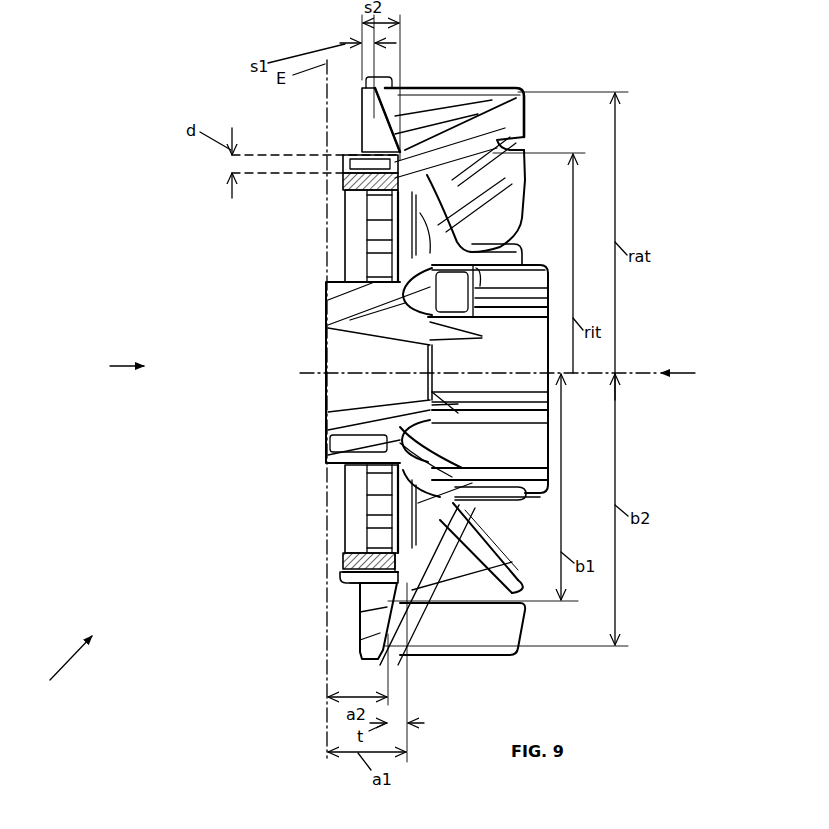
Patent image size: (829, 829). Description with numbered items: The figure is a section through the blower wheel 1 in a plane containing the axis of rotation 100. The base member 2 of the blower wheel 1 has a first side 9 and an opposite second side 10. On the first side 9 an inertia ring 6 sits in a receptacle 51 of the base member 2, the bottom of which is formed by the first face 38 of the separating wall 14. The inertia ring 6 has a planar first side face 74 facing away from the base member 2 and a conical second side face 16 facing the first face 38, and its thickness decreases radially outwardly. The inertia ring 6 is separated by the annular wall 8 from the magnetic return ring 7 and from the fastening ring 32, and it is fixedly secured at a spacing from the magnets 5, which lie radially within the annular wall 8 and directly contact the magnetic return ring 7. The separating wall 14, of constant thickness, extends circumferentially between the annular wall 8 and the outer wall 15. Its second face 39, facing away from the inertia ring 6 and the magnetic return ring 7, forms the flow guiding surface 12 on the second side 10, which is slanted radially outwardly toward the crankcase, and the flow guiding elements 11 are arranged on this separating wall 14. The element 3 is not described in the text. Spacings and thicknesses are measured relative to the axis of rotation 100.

The blower wheel 1 is at (64, 668).
The base member 2 is at (536, 262).
The ring 3 is at (338, 573).
The magnet 5 is at (343, 183).
The inertia ring 6 is at (372, 124).
The magnetic return ring 7 is at (398, 568).
The annular wall 8 is at (353, 585).
The first side 9 is at (117, 366).
The second side 10 is at (692, 373).
The flow guiding element 11 is at (498, 630).
The flow guiding surface 12 is at (418, 572).
The separating wall 14 is at (373, 654).
The outer wall 15 is at (372, 660).
The second side face 16 is at (404, 150).
The fastening ring 32 is at (396, 573).
The first face 38 is at (392, 636).
The second face 39 is at (519, 590).
The receptacle 51 is at (500, 140).
The first side face 74 is at (360, 156).
The axis of rotation 100 is at (311, 372).